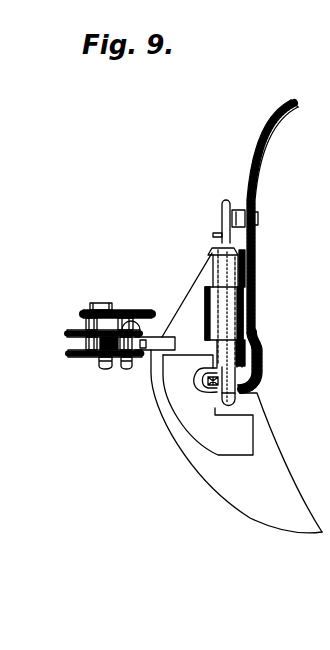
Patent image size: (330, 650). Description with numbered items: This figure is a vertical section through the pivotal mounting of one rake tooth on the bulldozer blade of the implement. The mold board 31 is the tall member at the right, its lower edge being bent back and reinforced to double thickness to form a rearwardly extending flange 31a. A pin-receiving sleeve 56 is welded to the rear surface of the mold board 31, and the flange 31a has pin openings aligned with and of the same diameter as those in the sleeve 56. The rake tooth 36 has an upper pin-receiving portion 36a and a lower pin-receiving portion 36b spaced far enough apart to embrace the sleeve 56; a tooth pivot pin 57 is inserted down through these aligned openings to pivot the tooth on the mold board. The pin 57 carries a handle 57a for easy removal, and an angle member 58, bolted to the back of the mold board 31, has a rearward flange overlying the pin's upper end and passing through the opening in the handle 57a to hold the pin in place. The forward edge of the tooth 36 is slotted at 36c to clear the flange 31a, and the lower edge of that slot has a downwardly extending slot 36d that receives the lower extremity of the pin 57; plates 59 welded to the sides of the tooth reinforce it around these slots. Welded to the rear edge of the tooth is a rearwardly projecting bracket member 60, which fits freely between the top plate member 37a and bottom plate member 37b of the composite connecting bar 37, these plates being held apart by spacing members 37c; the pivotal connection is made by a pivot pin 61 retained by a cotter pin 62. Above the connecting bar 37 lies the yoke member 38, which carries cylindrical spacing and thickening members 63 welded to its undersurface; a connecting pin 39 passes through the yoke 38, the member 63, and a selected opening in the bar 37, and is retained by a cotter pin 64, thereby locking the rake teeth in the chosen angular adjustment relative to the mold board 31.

The mold board 31 is at (257, 170).
The rearwardly extending flange 31a is at (263, 383).
The rake tooth 36 is at (273, 462).
The upper pin-receiving portion 36a is at (245, 268).
The lower pin-receiving portion 36b is at (246, 354).
The slot 36c is at (197, 389).
The downwardly extending slot 36d is at (207, 403).
The connecting bar 37 is at (58, 334).
The top plate member 37a is at (70, 334).
The bottom plate member 37b is at (72, 358).
The spacing member 37c is at (70, 341).
The yoke member 38 is at (138, 311).
The connecting pin 39 is at (98, 302).
The pin-receiving sleeve 56 is at (257, 296).
The tooth pivot pin 57 is at (240, 397).
The handle 57a is at (222, 212).
The angle member 58 is at (213, 235).
The reinforcing plate 59 is at (203, 440).
The bracket member 60 is at (152, 340).
The pivot pin 61 is at (126, 372).
The cotter pin 62 is at (145, 373).
The spacing and thickening member 63 is at (82, 327).
The cotter pin 64 is at (100, 367).